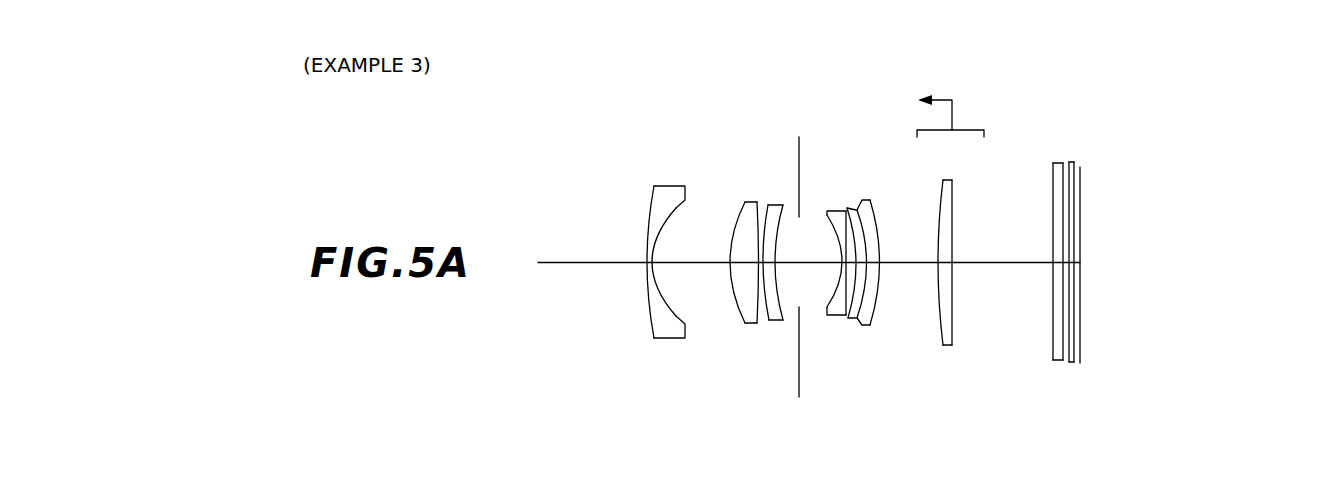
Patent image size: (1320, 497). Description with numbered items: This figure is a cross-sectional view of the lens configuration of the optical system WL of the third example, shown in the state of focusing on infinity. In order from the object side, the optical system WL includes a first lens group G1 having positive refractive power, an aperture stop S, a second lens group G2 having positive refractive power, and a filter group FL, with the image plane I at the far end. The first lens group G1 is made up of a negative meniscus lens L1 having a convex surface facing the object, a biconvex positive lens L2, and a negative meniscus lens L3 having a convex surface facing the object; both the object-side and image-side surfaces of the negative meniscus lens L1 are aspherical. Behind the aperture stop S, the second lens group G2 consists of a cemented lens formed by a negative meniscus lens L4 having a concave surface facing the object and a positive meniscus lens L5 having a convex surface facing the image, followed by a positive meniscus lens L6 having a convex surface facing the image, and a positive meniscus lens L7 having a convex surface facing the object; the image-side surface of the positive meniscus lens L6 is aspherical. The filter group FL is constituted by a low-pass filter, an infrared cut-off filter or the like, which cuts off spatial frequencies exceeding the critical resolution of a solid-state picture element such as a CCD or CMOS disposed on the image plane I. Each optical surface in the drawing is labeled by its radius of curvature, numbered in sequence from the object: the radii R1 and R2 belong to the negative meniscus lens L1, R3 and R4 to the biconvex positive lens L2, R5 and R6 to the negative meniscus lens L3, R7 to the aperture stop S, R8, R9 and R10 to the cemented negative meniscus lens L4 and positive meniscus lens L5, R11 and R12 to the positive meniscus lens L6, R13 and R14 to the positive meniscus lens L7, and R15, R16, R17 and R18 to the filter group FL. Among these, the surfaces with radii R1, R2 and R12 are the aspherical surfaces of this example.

The optical system WL is at (1247, 117).
The first lens group G1 is at (633, 420).
The second lens group G2 is at (820, 420).
The negative meniscus lens L1 is at (668, 281).
The biconvex positive lens L2 is at (740, 288).
The negative meniscus lens L3 is at (770, 288).
The negative meniscus lens L4 is at (827, 288).
The positive meniscus lens L5 is at (857, 288).
The positive meniscus lens L6 is at (881, 288).
The positive meniscus lens L7 is at (950, 281).
The aperture stop S is at (796, 268).
The filter group FL is at (1063, 254).
The image plane I is at (1080, 367).
The radius of curvature of surface 1 R1 is at (649, 215).
The radius of curvature of surface 2 R2 is at (686, 207).
The radius of curvature of surface 3 R3 is at (740, 210).
The radius of curvature of surface 4 R4 is at (757, 204).
The radius of curvature of surface 5 R5 is at (766, 206).
The radius of curvature of surface 6 R6 is at (783, 205).
The radius of curvature of surface 7 R7 is at (799, 137).
The radius of curvature of surface 8 R8 is at (826, 222).
The radius of curvature of surface 9 R9 is at (846, 213).
The radius of curvature of surface 10 R10 is at (849, 209).
The radius of curvature of surface 11 R11 is at (857, 212).
The radius of curvature of surface 12 R12 is at (871, 203).
The radius of curvature of surface 13 R13 is at (941, 197).
The radius of curvature of surface 14 R14 is at (954, 196).
The radius of curvature of surface 15 R15 is at (1052, 180).
The radius of curvature of surface 16 R16 is at (1063, 163).
The radius of curvature of surface 17 R17 is at (1070, 162).
The radius of curvature of surface 18 R18 is at (1076, 162).